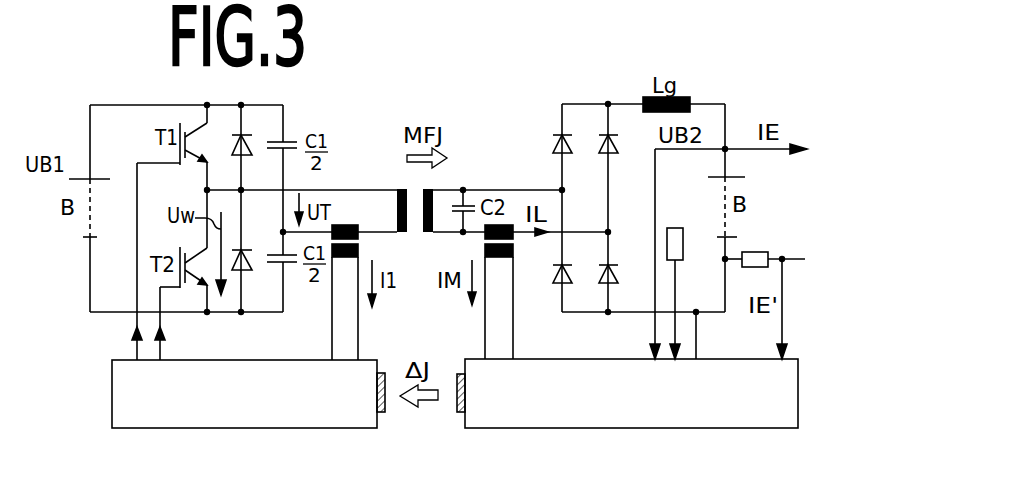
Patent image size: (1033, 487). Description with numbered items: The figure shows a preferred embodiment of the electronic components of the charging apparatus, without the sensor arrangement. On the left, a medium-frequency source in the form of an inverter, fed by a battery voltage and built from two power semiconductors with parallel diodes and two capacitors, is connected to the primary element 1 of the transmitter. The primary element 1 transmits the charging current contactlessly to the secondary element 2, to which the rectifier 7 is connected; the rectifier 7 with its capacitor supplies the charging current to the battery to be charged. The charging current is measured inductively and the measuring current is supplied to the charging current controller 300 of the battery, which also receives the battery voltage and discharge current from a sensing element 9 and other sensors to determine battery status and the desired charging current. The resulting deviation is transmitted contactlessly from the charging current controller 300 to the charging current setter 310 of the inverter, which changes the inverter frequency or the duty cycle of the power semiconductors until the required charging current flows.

The primary element 1 is at (400, 188).
The secondary element 2 is at (431, 188).
The rectifier 7 is at (586, 140).
The voltage detector 9 is at (671, 227).
The charging current controller 300 is at (798, 410).
The charging current setter 310 is at (112, 389).